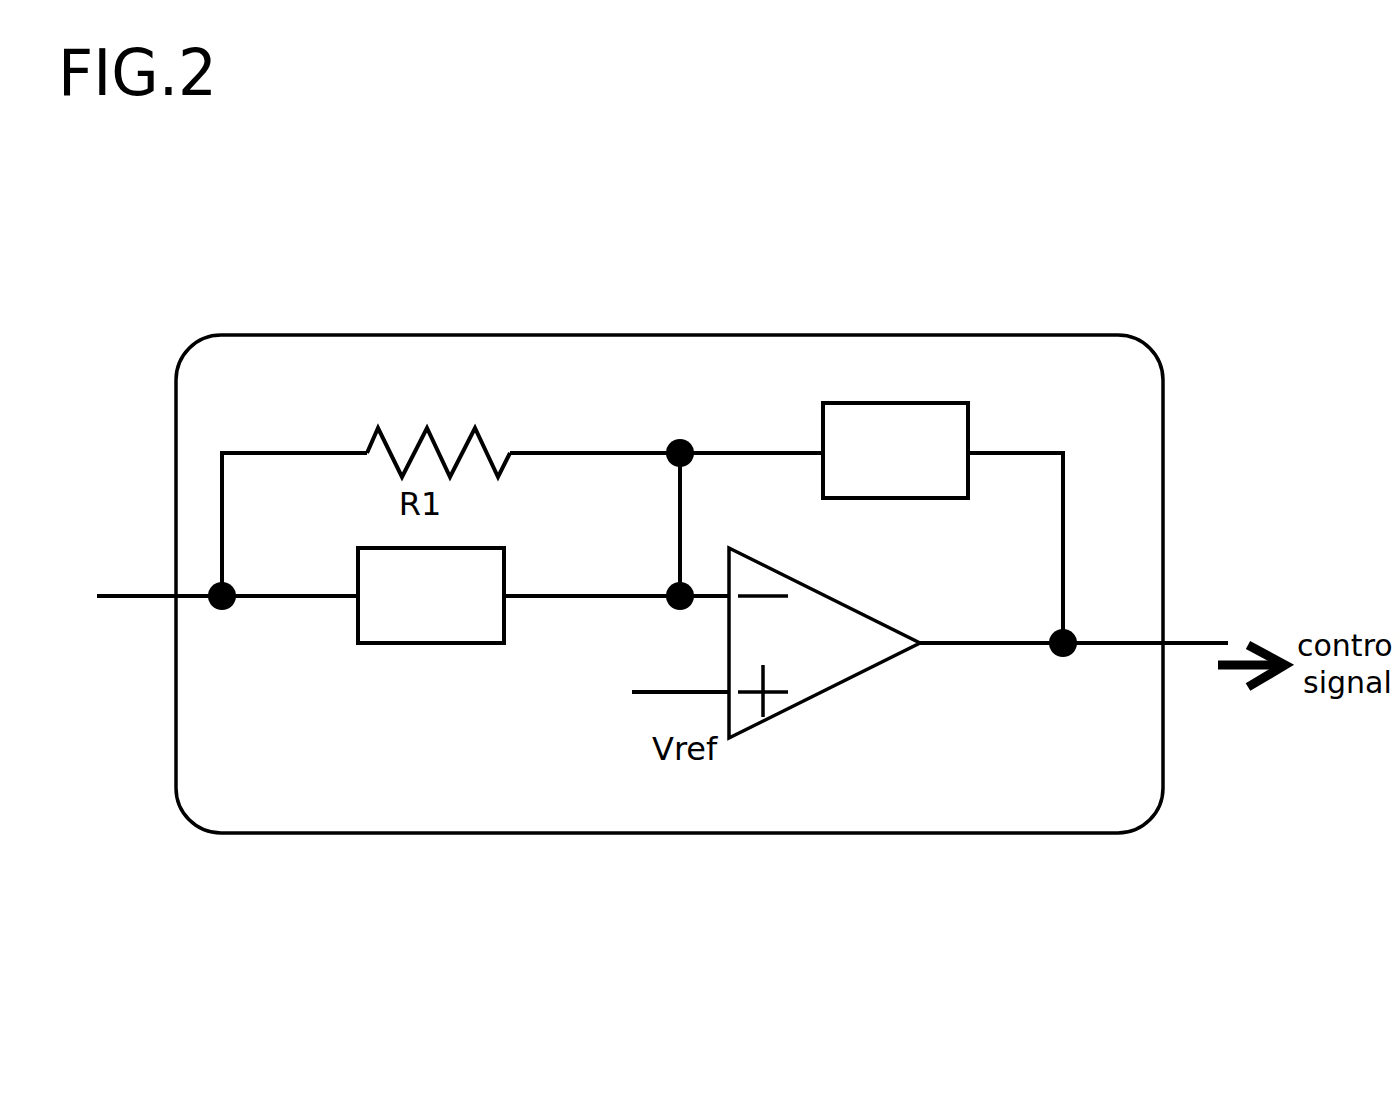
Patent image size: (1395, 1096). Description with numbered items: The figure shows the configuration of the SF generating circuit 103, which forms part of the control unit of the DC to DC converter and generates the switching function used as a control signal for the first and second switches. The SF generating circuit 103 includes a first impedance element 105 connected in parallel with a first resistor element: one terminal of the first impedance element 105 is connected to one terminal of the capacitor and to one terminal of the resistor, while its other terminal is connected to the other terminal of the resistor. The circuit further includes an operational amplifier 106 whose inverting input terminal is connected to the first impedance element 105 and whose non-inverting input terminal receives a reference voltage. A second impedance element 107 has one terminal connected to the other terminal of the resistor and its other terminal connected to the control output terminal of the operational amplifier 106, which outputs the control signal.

The SF generating circuit 103 is at (587, 833).
The first impedance element 105 is at (395, 645).
The operational amplifier 106 is at (807, 703).
The second impedance element 107 is at (948, 500).